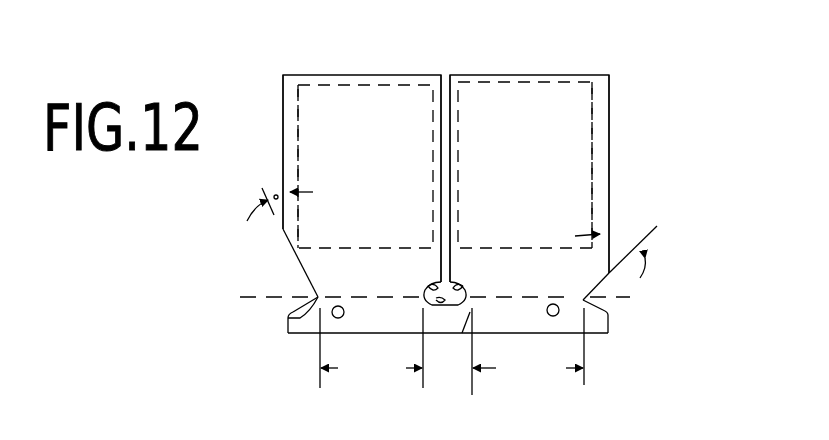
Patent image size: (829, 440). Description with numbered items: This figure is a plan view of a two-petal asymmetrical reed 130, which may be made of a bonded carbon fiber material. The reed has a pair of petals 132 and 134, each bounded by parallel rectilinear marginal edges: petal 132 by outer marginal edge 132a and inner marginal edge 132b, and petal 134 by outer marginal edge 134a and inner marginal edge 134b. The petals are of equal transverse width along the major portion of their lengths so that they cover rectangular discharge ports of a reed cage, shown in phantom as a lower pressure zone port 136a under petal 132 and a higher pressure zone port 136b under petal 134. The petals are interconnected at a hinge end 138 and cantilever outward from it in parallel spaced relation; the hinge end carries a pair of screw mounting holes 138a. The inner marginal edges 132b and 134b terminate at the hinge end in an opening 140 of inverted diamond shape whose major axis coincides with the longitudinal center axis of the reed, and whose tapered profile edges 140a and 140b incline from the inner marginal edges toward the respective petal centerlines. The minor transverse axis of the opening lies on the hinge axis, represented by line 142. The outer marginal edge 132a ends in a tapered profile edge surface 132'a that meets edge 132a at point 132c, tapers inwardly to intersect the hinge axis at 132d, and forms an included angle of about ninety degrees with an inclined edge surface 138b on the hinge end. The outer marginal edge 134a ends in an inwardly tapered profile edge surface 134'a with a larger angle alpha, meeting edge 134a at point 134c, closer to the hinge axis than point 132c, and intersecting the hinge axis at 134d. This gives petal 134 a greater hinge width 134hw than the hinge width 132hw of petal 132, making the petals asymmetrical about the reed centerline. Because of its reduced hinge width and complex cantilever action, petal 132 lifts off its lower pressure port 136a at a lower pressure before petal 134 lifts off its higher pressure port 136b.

The reed 130 is at (245, 102).
The petal 132 is at (365, 128).
The petal 134 is at (525, 134).
The outer marginal edge 132a is at (283, 103).
The outer marginal edge 134a is at (609, 98).
The inner marginal edge 132b is at (443, 113).
The inner marginal edge 134b is at (447, 110).
The point of intersection 132c is at (283, 229).
The point of intersection 134c is at (598, 282).
The tapered profile edge surface 132'a is at (247, 290).
The tapered profile edge surface 134'a is at (645, 310).
The intersection point with hinge axis 132d is at (312, 302).
The intersection point with hinge axis 134d is at (592, 308).
The discharge port 136a is at (283, 168).
The discharge port 136b is at (600, 158).
The hinge end 138 is at (448, 366).
The screw mounting holes 138a is at (338, 319).
The inclined edge surface 138b is at (300, 318).
The opening 140 is at (433, 306).
The tapered profile edge 140a is at (432, 284).
The tapered profile edge 140b is at (460, 284).
The hinge axis 142 is at (266, 300).
The hinge width 132hw is at (371, 348).
The hinge width 134hw is at (528, 346).